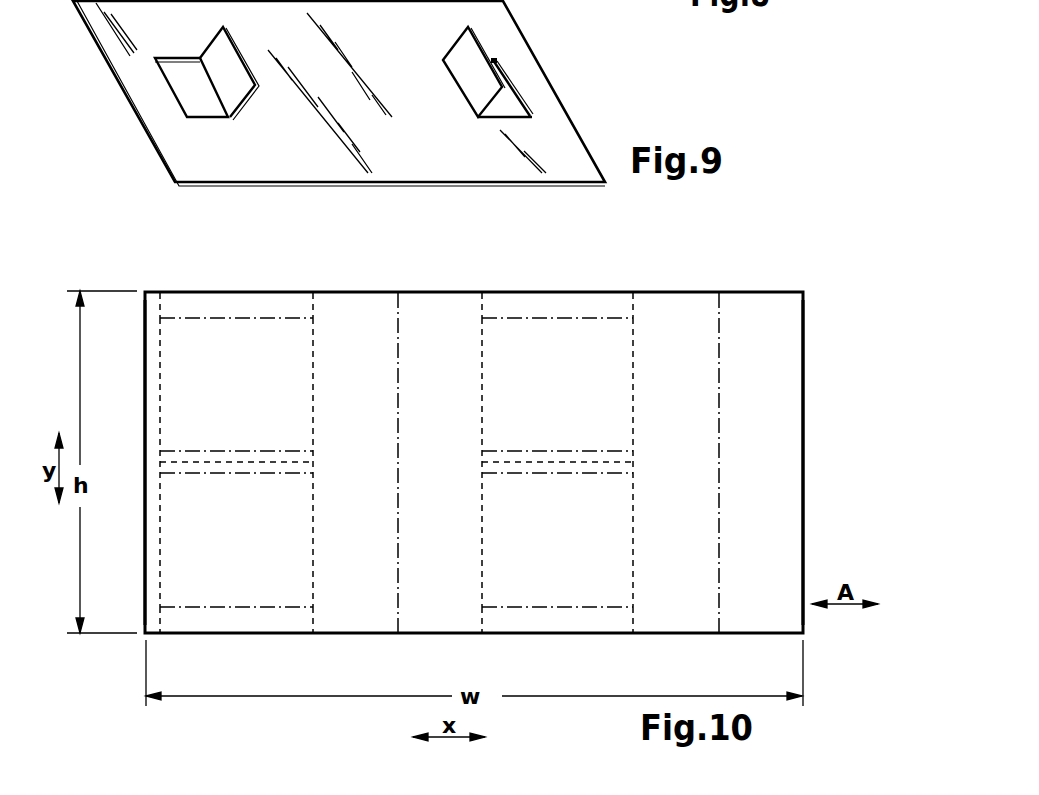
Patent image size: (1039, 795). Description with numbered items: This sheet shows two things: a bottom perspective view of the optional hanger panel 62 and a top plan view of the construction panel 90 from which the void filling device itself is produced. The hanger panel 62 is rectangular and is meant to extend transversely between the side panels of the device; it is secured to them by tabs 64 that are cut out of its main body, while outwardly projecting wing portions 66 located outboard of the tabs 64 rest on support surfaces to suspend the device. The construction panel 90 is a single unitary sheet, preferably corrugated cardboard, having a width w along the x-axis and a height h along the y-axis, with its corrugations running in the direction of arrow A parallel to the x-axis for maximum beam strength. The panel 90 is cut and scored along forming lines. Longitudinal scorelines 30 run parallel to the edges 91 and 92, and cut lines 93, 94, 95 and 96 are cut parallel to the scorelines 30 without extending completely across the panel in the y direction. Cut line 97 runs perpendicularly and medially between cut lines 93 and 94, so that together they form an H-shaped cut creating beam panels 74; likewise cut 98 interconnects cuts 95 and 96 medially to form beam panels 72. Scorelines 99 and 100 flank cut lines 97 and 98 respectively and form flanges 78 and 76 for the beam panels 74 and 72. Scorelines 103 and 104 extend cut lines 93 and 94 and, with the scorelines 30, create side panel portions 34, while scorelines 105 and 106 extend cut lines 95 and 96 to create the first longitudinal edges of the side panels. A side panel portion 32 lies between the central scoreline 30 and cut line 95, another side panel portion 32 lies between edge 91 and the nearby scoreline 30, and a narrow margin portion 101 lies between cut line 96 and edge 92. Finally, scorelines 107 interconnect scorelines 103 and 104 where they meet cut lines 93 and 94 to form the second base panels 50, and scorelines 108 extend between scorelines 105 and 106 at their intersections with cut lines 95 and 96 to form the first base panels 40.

In FIG. 10, the longitudinal scoreline 30 is at (399, 420).
In FIG. 10, the side panel portion 32 is at (364, 534).
In FIG. 10, the side panel portion 34 is at (452, 534).
In FIG. 10, the first base panel 40 is at (249, 320).
In FIG. 10, the second base panel 50 is at (570, 320).
In FIG. 9, the hanger panel 62 is at (568, 40).
In FIG. 9, the tab 64 is at (232, 66).
In FIG. 9, the wing portion 66 is at (535, 79).
In FIG. 10, the beam panel 72 is at (270, 384).
In FIG. 10, the beam panel 74 is at (592, 384).
In FIG. 10, the flange 76 is at (308, 472).
In FIG. 10, the flange 78 is at (630, 472).
In FIG. 10, the construction panel 90 is at (762, 242).
In FIG. 10, the edge 91 is at (805, 388).
In FIG. 10, the edge 92 is at (145, 407).
In FIG. 10, the cut line 93 is at (634, 348).
In FIG. 10, the cut line 94 is at (483, 375).
In FIG. 10, the cut line 95 is at (314, 393).
In FIG. 10, the cut line 96 is at (161, 375).
In FIG. 10, the cut line 97 is at (508, 462).
In FIG. 10, the cut 98 is at (185, 462).
In FIG. 10, the scoreline 99 is at (552, 450).
In FIG. 10, the scoreline 100 is at (237, 451).
In FIG. 10, the narrow margin portion 101 is at (148, 531).
In FIG. 10, the scoreline 103 is at (633, 303).
In FIG. 10, the scoreline 104 is at (482, 317).
In FIG. 10, the scoreline 105 is at (313, 303).
In FIG. 10, the scoreline 106 is at (162, 300).
In FIG. 10, the scoreline 107 is at (588, 317).
In FIG. 10, the scoreline 108 is at (265, 318).